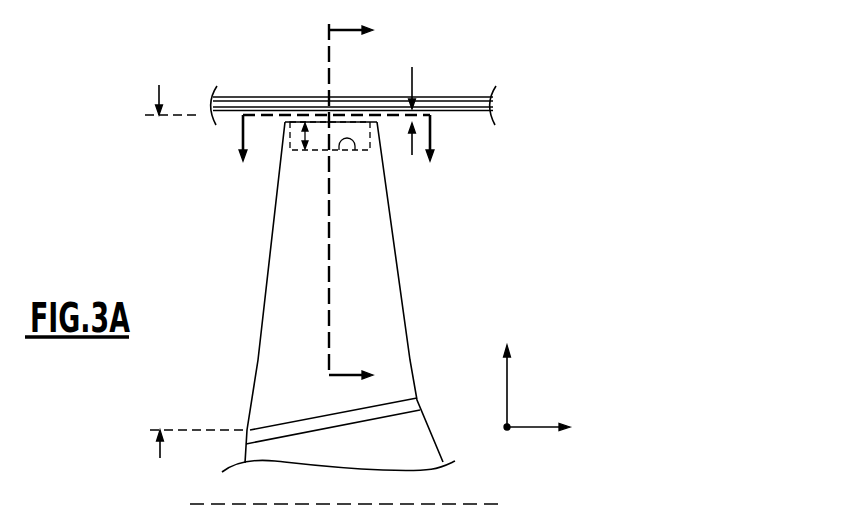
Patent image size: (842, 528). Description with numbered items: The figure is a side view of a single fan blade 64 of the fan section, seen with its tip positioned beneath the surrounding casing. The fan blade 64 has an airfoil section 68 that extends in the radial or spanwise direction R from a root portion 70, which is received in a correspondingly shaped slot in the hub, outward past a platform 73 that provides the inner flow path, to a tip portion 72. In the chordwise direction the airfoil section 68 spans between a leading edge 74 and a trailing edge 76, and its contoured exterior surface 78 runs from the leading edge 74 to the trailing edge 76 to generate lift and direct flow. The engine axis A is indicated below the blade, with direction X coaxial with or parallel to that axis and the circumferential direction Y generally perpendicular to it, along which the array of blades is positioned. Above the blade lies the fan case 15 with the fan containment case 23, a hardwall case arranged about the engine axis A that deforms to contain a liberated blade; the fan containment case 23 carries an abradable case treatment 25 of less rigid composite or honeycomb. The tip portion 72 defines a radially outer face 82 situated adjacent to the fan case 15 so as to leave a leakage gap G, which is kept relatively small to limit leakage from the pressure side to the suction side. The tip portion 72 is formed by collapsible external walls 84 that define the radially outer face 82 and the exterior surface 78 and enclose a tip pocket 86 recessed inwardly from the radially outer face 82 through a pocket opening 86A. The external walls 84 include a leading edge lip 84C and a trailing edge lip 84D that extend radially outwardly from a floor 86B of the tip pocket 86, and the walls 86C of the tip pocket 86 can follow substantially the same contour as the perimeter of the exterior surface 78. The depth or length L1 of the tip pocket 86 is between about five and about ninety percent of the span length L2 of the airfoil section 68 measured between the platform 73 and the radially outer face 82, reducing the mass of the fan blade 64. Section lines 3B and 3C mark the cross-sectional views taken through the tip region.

The fan case 15 is at (308, 64).
The fan containment case 23 is at (308, 64).
The abradable case treatment 25 is at (239, 107).
The fan blade 64 is at (349, 261).
The airfoil section 68 is at (283, 256).
The root portion 70 is at (415, 427).
The tip portion 72 is at (318, 132).
The platform 73 is at (242, 438).
The leading edge 74 is at (276, 203).
The trailing edge 76 is at (395, 245).
The exterior surface 78 is at (334, 292).
The radially outer face 82 is at (365, 132).
The collapsible external walls 84 is at (206, 164).
The leading edge lip 84C is at (285, 125).
The trailing edge lip 84D is at (379, 131).
The tip pocket 86 is at (365, 132).
The pocket opening 86A is at (368, 122).
The floor 86B is at (363, 200).
The walls of the tip pocket 86C is at (295, 124).
The length of the tip pocket L1 is at (317, 150).
The span length L2 is at (158, 92).
The leakage gap G is at (415, 78).
The engine axis A is at (468, 504).
The radial direction R is at (507, 395).
The direction X is at (535, 427).
The circumferential direction Y is at (505, 430).
The section line 3B- 3B is at (338, 140).
The section line 3C- 3C is at (331, 203).